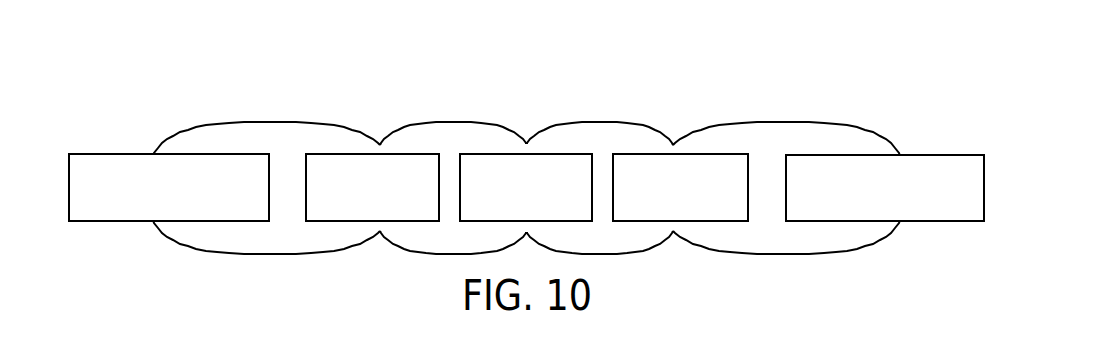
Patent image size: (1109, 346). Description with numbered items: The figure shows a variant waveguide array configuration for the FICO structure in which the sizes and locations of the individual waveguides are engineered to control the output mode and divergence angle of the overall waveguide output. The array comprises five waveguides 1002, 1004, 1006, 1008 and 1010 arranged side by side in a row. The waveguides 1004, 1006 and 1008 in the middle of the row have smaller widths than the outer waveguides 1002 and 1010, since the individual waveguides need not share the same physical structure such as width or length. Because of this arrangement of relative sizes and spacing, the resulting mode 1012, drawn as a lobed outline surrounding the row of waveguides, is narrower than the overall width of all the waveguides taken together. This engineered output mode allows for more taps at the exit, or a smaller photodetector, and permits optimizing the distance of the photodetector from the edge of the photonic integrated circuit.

The waveguide 1002 is at (140, 200).
The waveguide 1004 is at (343, 200).
The waveguide 1006 is at (497, 200).
The waveguide 1008 is at (651, 200).
The waveguide 1010 is at (856, 200).
The resulting mode 1012 is at (277, 130).